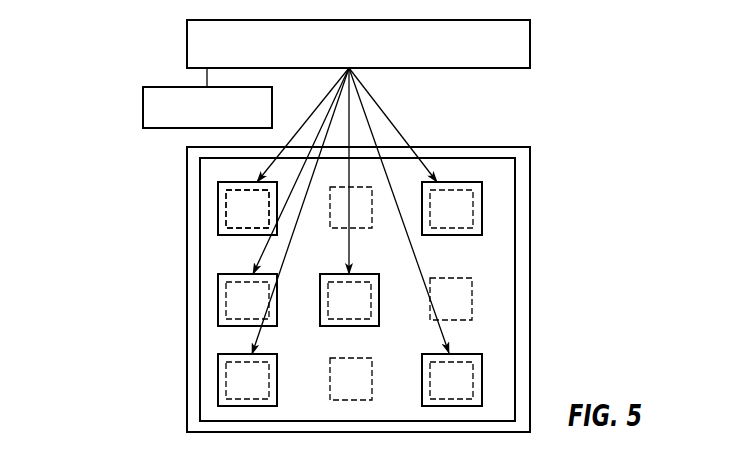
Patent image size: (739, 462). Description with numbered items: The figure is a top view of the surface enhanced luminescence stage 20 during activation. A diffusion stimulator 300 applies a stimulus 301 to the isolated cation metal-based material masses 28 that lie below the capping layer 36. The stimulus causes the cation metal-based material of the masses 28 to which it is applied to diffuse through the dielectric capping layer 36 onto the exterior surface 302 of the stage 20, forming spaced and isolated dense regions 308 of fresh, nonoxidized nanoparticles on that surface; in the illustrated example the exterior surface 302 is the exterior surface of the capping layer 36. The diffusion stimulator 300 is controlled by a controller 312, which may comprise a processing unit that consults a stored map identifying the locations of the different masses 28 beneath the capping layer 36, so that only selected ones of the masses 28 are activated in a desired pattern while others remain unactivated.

The diffusion stimulator 300 is at (187, 42).
The controller 312 is at (143, 108).
The stimulus 301 is at (410, 132).
The surface enhanced luminescence (SEL) stage 20 is at (186, 208).
The capping layer 36 is at (200, 281).
The exterior surface 302 is at (212, 335).
The dense regions 308 is at (218, 196).
The cation metal-based material masses 28 is at (226, 218).